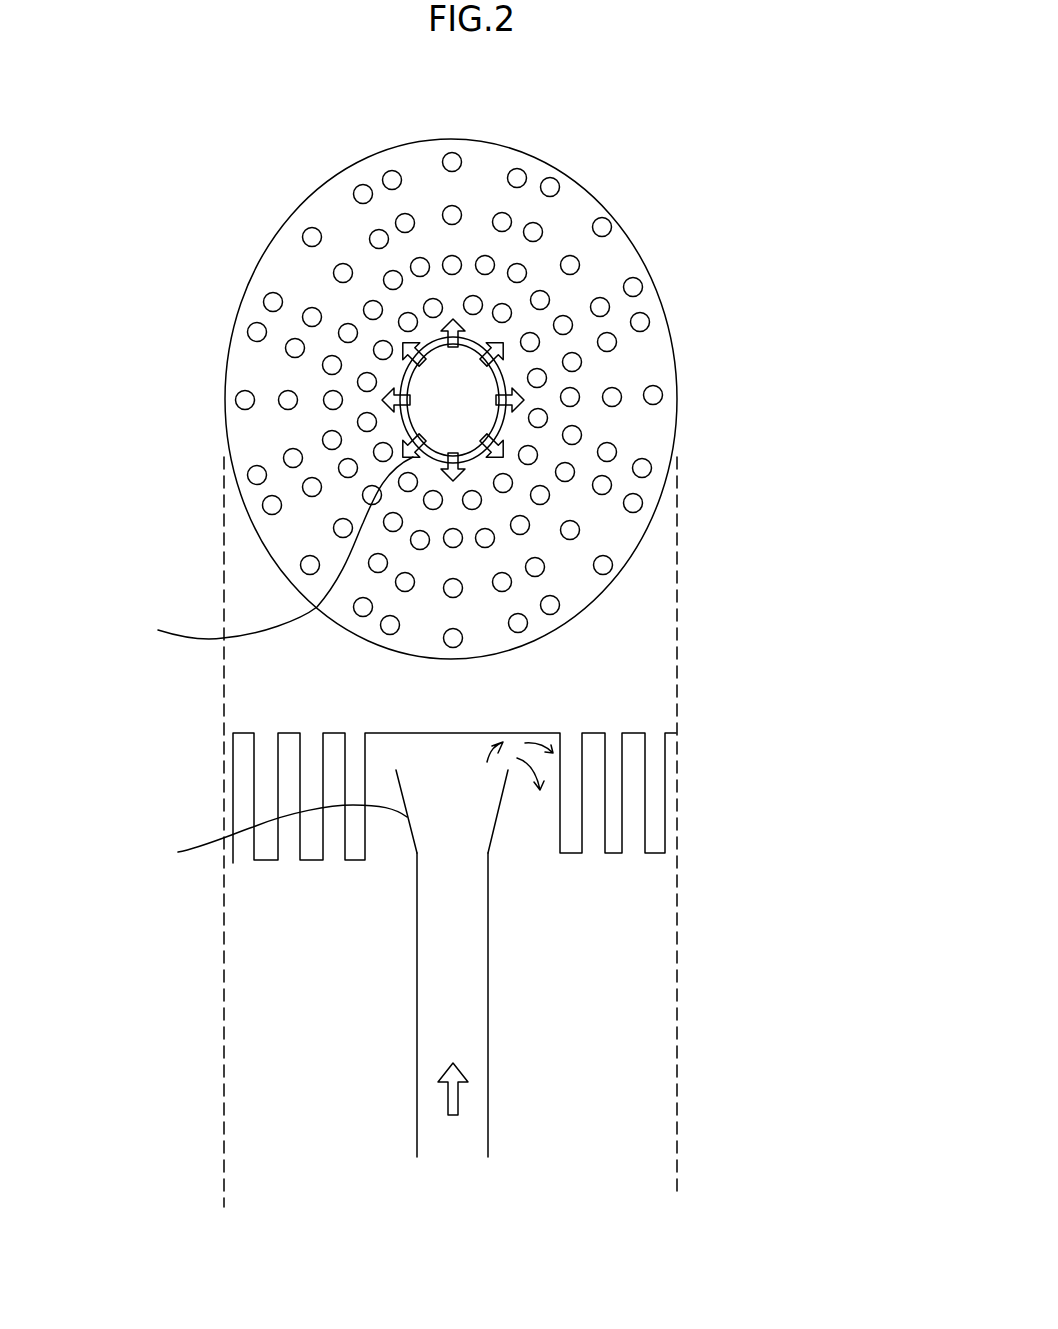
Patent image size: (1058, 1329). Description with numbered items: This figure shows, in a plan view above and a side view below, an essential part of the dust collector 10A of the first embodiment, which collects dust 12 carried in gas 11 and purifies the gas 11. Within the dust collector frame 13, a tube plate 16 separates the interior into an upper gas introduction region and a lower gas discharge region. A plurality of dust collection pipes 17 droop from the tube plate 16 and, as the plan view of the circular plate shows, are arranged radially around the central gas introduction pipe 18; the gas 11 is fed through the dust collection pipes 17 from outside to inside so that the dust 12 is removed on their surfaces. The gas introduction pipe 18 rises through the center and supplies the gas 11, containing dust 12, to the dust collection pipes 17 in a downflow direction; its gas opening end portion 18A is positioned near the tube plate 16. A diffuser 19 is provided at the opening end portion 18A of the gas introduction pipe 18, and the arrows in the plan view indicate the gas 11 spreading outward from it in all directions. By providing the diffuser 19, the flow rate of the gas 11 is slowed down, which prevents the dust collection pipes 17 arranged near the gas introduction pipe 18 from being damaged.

The dust collector 10A is at (623, 130).
The gas 11 is at (413, 352).
The dust 12 is at (547, 1175).
The dust collector frame 13 is at (638, 248).
The tube plate 16 is at (532, 730).
The dust collection pipes 17 is at (658, 384).
The gas introduction pipe 18 is at (497, 385).
The gas opening end portion 18A is at (495, 853).
The diffuser 19 is at (275, 654).